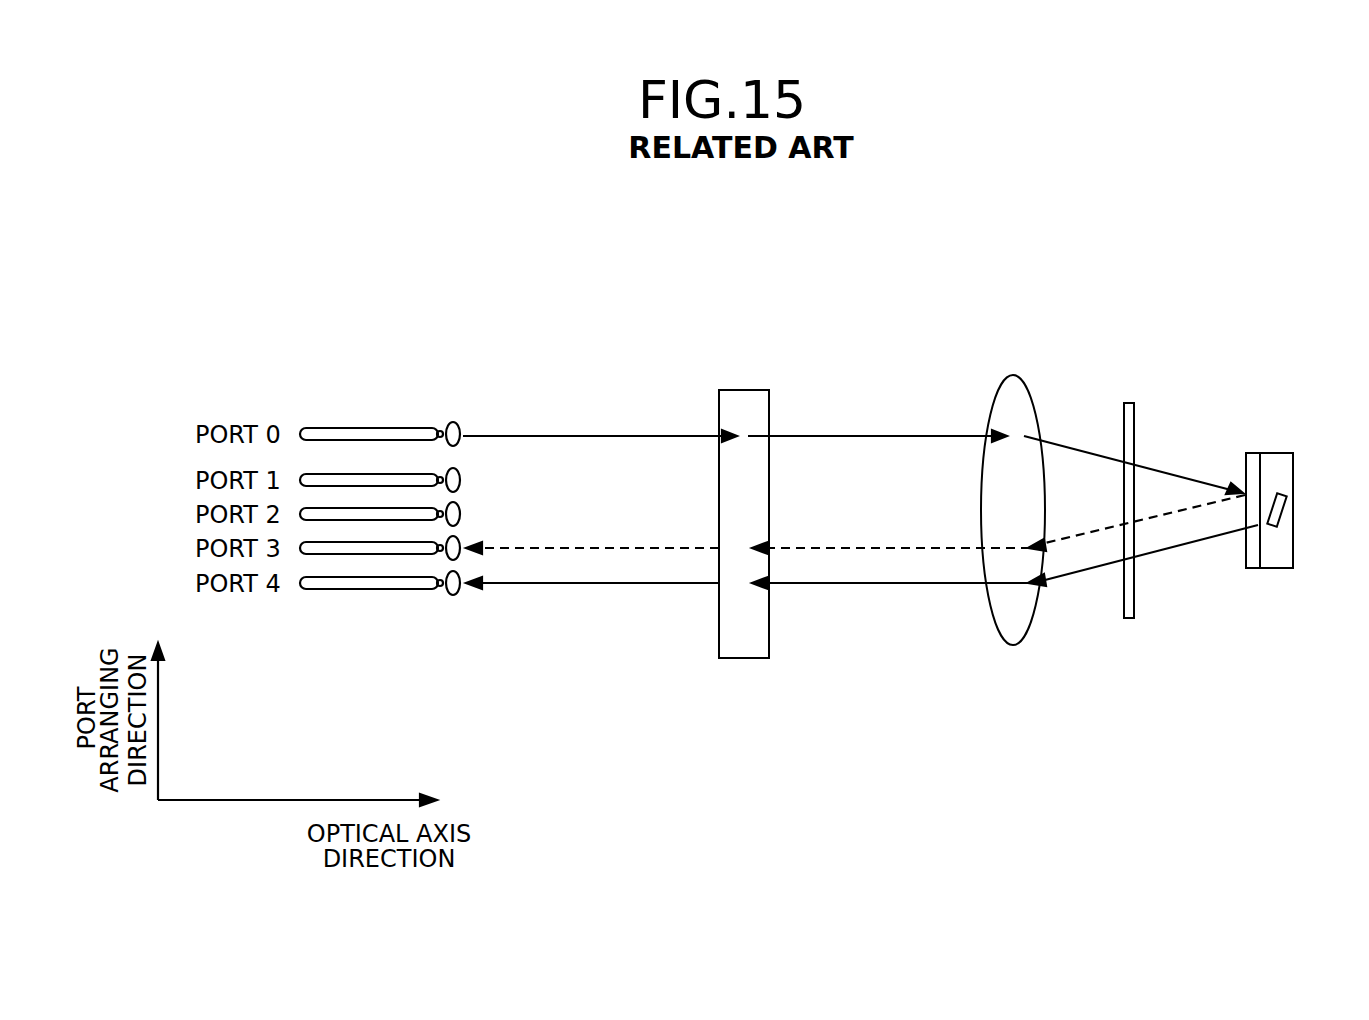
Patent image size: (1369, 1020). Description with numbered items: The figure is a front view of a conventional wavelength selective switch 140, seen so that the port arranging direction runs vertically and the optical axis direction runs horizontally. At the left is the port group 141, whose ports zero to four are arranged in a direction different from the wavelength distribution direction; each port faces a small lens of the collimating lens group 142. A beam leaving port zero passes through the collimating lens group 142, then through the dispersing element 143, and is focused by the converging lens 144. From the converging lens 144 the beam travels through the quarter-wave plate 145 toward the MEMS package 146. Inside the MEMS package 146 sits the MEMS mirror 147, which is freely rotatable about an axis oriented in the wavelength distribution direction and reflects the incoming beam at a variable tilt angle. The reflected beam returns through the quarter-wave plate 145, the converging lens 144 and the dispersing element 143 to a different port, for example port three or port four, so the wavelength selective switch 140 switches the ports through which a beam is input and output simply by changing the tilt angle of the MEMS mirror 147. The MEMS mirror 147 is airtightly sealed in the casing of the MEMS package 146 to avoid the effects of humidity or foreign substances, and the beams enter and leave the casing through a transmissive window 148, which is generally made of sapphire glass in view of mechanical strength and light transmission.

The wavelength selective switch 140 is at (920, 318).
The port group 141 is at (376, 408).
The collimating lens group 142 is at (466, 408).
The dispersing element 143 is at (748, 390).
The converging lens 144 is at (1026, 384).
The λ/4 plate 145 is at (1130, 403).
The MEMS package 146 is at (1255, 453).
The MEMS mirror 147 is at (1288, 512).
The transmissive window 148 is at (1255, 568).